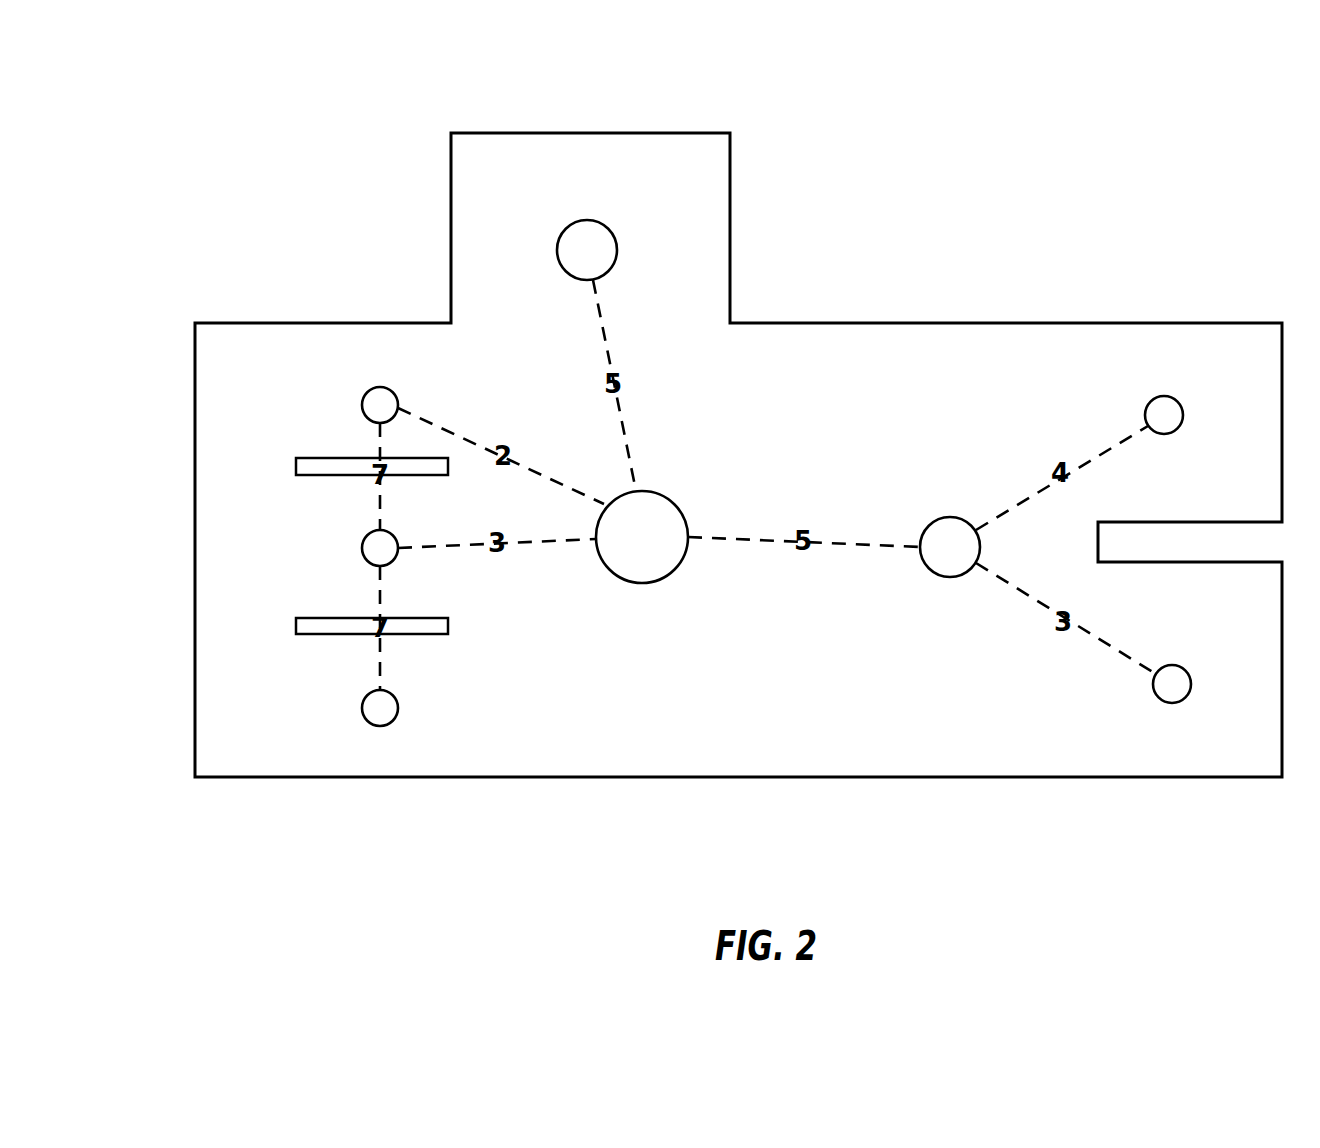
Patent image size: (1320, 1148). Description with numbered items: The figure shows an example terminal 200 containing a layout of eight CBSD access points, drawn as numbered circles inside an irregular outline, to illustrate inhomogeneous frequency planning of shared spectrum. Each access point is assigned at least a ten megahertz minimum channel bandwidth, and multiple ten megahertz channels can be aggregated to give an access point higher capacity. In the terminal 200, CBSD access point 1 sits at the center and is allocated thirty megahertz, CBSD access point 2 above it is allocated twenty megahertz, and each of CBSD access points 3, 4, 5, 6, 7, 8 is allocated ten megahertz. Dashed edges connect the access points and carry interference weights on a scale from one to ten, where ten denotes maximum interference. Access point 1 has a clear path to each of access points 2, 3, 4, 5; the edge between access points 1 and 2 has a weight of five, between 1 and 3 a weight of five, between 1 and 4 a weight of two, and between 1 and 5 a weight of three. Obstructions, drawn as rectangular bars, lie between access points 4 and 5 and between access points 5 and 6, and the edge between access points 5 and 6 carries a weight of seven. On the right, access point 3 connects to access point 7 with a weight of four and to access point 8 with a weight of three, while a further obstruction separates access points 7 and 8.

The terminal 200 is at (237, 73).
The CBSD access point 1 is at (634, 550).
The CBSD access point 2 is at (579, 263).
The CBSD access point 3 is at (942, 560).
The CBSD access point 4 is at (374, 416).
The CBSD access point 5 is at (374, 559).
The CBSD access point 6 is at (374, 719).
The CBSD access point 7 is at (1158, 426).
The CBSD access point 8 is at (1166, 695).